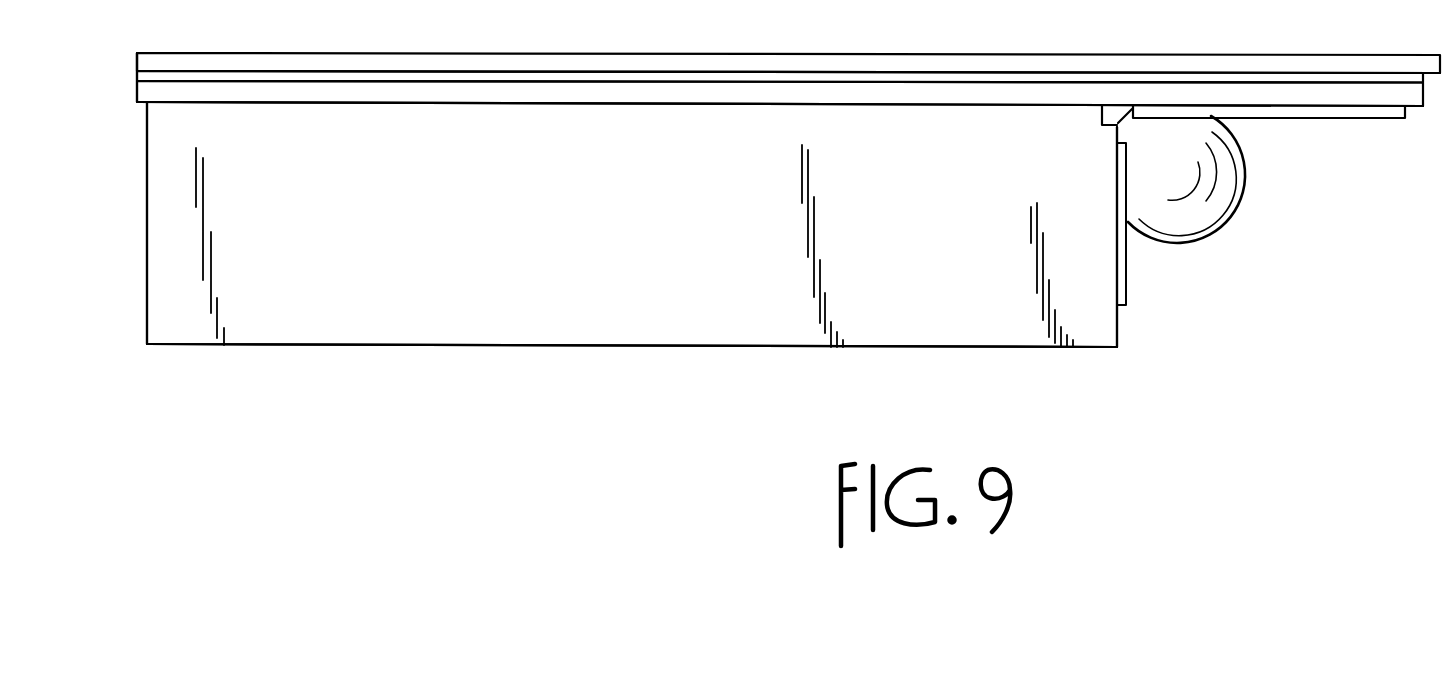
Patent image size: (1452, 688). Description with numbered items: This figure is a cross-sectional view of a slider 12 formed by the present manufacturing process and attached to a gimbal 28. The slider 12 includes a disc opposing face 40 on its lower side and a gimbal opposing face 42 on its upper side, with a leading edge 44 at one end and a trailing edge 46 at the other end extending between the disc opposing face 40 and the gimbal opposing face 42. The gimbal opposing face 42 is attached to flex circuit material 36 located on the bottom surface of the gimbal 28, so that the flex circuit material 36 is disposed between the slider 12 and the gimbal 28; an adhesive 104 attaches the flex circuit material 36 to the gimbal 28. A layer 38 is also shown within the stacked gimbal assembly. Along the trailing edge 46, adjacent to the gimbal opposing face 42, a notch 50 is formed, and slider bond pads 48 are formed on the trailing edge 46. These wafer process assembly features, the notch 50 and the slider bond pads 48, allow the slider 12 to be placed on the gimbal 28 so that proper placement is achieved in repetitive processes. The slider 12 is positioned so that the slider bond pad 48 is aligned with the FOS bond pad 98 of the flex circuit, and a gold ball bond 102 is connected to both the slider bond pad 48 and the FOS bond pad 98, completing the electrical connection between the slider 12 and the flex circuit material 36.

The slider 12 is at (553, 326).
The gimbal 28 is at (640, 63).
The flex circuit material 36 is at (557, 92).
The intermediate layer 38 is at (712, 72).
The adhesive 104 is at (793, 78).
The gimbal opposing face 42 is at (513, 102).
The FOS bond pad 98 is at (1278, 120).
The leading edge 44 is at (147, 303).
The disc opposing face 40 is at (747, 346).
The trailing edge 46 is at (1117, 327).
The notch 50 is at (1113, 113).
The slider bond pads 48 is at (1126, 257).
The gold ball bond 102 is at (1212, 203).